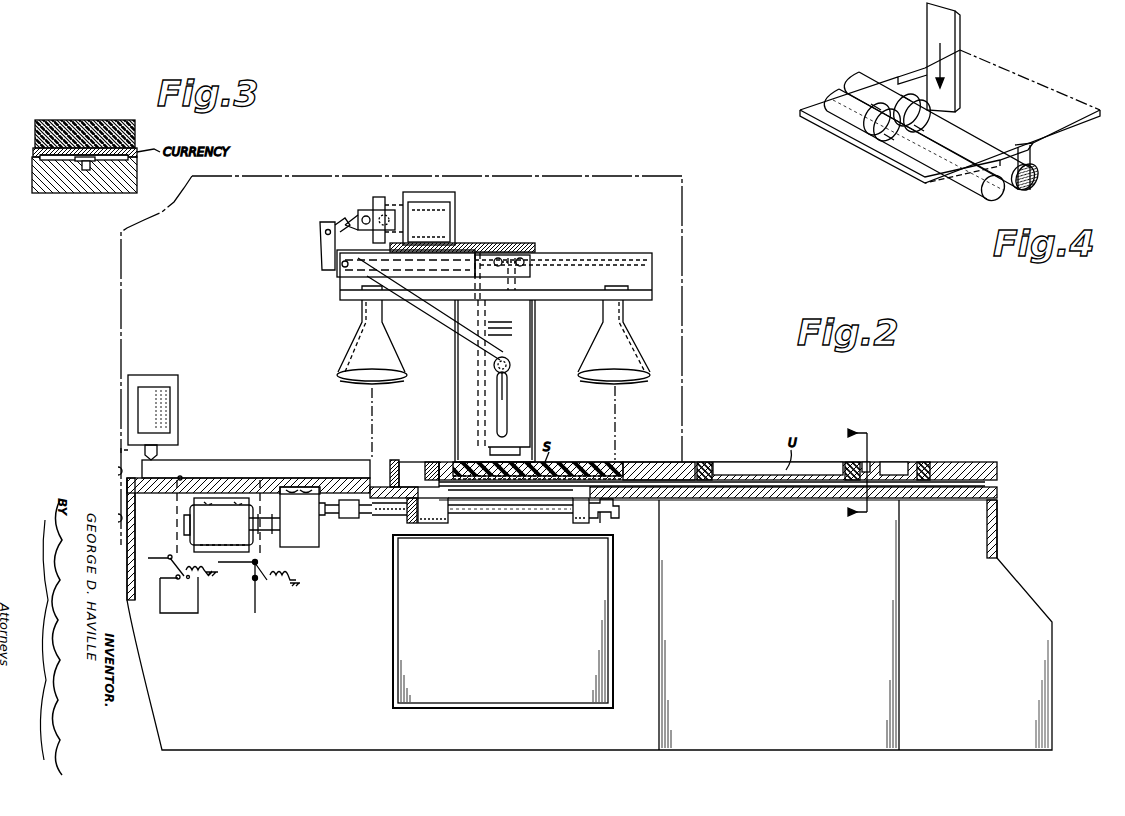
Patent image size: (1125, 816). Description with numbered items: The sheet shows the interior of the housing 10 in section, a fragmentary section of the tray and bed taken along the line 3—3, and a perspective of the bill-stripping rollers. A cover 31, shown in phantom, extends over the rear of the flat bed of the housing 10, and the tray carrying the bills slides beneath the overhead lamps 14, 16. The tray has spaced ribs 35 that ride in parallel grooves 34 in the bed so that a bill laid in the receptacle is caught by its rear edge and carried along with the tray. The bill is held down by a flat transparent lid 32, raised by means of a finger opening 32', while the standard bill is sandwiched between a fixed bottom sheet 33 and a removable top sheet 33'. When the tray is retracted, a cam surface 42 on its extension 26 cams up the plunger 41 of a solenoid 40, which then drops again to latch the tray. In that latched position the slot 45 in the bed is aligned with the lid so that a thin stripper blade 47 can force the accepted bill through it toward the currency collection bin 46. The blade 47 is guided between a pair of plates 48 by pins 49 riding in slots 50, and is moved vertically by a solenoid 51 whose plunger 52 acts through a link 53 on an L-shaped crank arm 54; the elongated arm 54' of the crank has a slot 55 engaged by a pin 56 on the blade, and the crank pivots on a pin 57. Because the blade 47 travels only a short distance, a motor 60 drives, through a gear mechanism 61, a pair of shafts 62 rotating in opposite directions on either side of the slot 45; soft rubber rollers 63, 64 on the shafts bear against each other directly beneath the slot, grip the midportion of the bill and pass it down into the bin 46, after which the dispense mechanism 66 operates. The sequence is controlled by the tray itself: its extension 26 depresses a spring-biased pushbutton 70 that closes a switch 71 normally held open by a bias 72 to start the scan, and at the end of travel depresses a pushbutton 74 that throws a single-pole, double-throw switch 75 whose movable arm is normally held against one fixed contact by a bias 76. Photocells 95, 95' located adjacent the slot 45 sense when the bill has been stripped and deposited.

In FIG. 2, the housing 10 is at (585, 608).
In FIG. 2, the lamp 14 is at (650, 372).
In FIG. 2, the lamp 16 is at (345, 373).
In FIG. 2, the extension 26 is at (414, 468).
In FIG. 2, the cover 31 is at (652, 176).
In FIG. 3, the lid 32 is at (85, 118).
In FIG. 2, the lid 32 is at (778, 456).
In FIG. 2, the finger opening 32' is at (927, 454).
In FIG. 2, the bottom transparent sheet 33 is at (718, 458).
In FIG. 2, the top transparent sheet 33' is at (538, 454).
In FIG. 3, the grooves 34 is at (88, 170).
In FIG. 3, the ribs 35 is at (72, 172).
In FIG. 2, the ribs 35 is at (998, 478).
In FIG. 2, the section line 3 is at (842, 476).
In FIG. 2, the solenoid 40 is at (162, 375).
In FIG. 2, the plunger 41 is at (160, 452).
In FIG. 2, the cam surface 42 is at (395, 460).
In FIG. 2, the slot 45 is at (648, 462).
In FIG. 2, the currency collection bin 46 is at (393, 598).
In FIG. 4, the stripper blade 47 is at (960, 46).
In FIG. 2, the stripper blade 47 is at (480, 418).
In FIG. 2, the plates 48 is at (535, 425).
In FIG. 2, the pins 49 is at (494, 367).
In FIG. 2, the slots 50 is at (500, 393).
In FIG. 2, the solenoid 51 is at (458, 222).
In FIG. 2, the plunger 52 is at (380, 208).
In FIG. 2, the link 53 is at (360, 212).
In FIG. 2, the crank arm 54 is at (321, 246).
In FIG. 2, the elongated arm 54' is at (430, 309).
In FIG. 2, the slot 55 is at (494, 271).
In FIG. 2, the pin 56 is at (522, 258).
In FIG. 2, the pin 57 is at (342, 266).
In FIG. 2, the motor 60 is at (230, 532).
In FIG. 2, the gear mechanism 61 is at (307, 528).
In FIG. 4, the shafts 62 is at (850, 84).
In FIG. 2, the shafts 62 is at (380, 522).
In FIG. 4, the roller 63 is at (925, 115).
In FIG. 2, the roller 63 is at (448, 523).
In FIG. 4, the roller 64 is at (1038, 172).
In FIG. 2, the roller 64 is at (582, 523).
In FIG. 2, the dispense mechanism 66 is at (779, 625).
In FIG. 2, the pushbutton 70 is at (262, 470).
In FIG. 2, the switch 71 is at (242, 587).
In FIG. 2, the bias 72 is at (296, 578).
In FIG. 2, the pushbutton 74 is at (183, 477).
In FIG. 2, the single-pole double-throw switch 75 is at (172, 584).
In FIG. 2, the bias 76 is at (198, 580).
In FIG. 2, the photocell 95 is at (363, 520).
In FIG. 2, the photocell 95' is at (618, 524).